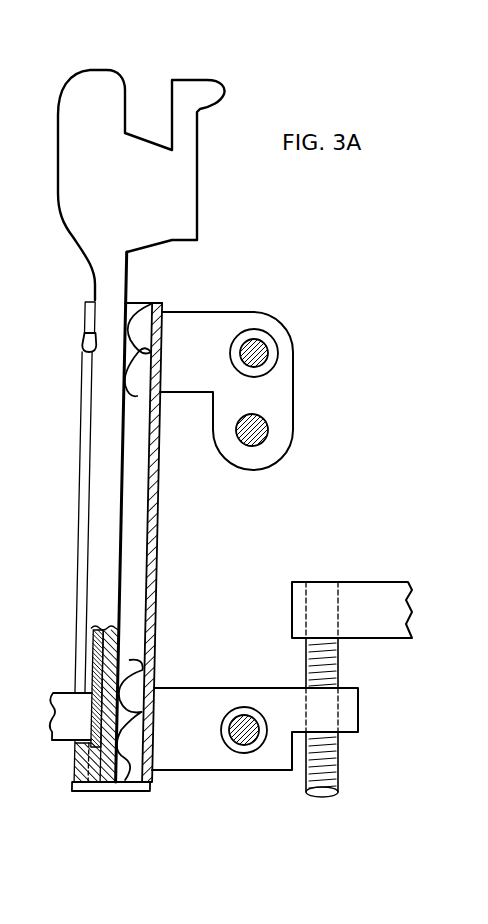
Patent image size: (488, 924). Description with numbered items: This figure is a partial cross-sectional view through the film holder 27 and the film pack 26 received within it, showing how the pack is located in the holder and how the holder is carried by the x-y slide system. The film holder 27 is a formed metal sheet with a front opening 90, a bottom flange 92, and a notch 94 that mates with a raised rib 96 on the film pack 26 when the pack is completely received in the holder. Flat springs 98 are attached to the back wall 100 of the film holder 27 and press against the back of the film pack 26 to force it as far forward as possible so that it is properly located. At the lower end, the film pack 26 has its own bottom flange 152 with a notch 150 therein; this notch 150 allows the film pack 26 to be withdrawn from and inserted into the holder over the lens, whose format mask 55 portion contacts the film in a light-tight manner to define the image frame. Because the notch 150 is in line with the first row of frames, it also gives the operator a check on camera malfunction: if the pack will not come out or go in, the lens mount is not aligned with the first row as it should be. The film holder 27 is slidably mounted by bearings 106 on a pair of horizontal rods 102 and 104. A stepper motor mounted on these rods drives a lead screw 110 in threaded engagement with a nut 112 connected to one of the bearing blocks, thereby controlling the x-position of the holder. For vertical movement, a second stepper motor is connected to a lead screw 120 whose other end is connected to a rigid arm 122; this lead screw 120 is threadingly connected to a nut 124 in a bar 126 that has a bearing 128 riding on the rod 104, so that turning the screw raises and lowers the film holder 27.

The film pack 26 is at (128, 80).
The film holder 27 is at (158, 512).
The back wall 100 is at (158, 552).
The front opening 90 is at (46, 522).
The raised rib 96 is at (82, 340).
The notch 94 is at (80, 347).
The flat springs 98 is at (139, 306).
The bottom flange 92 is at (100, 790).
The format mask 55 is at (60, 693).
The bottom flange 152 is at (78, 755).
The notch 150 is at (80, 773).
The nut 112 is at (287, 405).
The bearings 106 is at (246, 334).
The horizontal rod 102 is at (268, 352).
The lead screw 110 is at (266, 442).
The rigid arm 122 is at (370, 588).
The nut 124 is at (355, 690).
The bar 126 is at (280, 688).
The bearing 128 is at (240, 748).
The horizontal rod 104 is at (253, 738).
The lead screw 120 is at (340, 777).